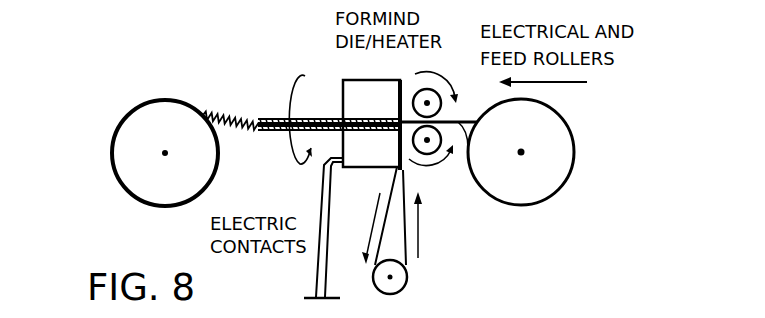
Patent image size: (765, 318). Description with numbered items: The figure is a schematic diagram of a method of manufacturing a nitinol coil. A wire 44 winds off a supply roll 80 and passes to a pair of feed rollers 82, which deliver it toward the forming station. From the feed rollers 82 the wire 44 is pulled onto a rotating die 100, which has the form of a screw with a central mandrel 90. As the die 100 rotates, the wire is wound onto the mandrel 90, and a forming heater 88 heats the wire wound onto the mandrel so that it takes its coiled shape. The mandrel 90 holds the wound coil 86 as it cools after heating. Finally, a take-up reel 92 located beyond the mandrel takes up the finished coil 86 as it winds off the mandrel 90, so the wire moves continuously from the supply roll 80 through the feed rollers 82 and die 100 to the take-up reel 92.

The take-up reel 92 is at (128, 145).
The mandrel 90 is at (263, 119).
The wound coil 86 is at (270, 132).
The rotating die 100 is at (355, 117).
The forming heater 88 is at (355, 170).
The feed rollers 82 is at (424, 88).
The wire 44 is at (470, 153).
The supply roll 80 is at (562, 136).